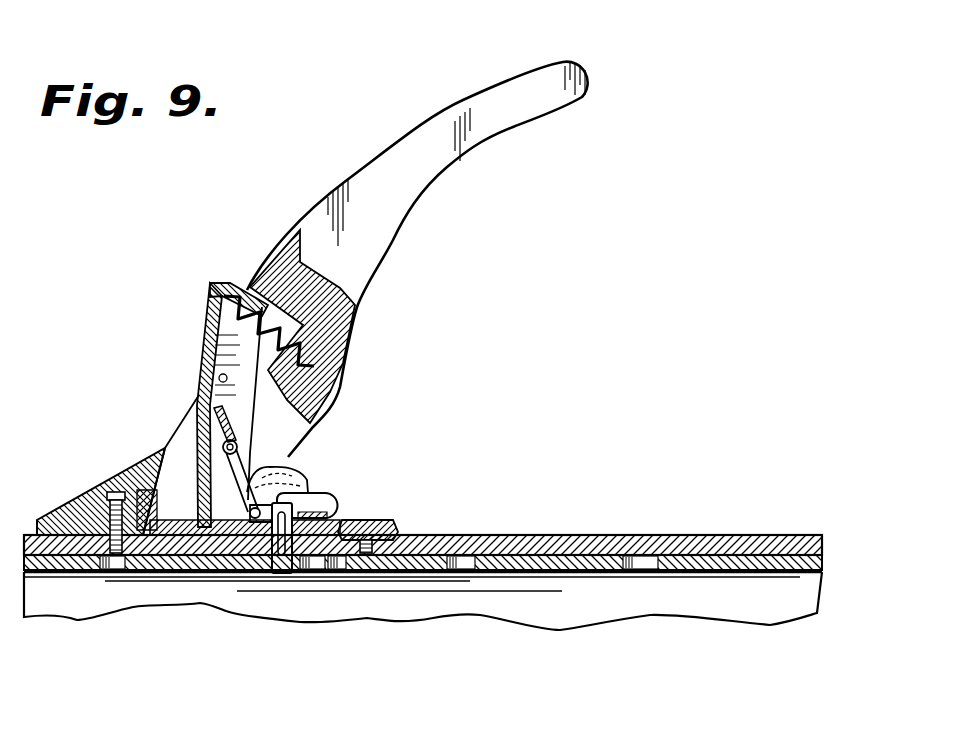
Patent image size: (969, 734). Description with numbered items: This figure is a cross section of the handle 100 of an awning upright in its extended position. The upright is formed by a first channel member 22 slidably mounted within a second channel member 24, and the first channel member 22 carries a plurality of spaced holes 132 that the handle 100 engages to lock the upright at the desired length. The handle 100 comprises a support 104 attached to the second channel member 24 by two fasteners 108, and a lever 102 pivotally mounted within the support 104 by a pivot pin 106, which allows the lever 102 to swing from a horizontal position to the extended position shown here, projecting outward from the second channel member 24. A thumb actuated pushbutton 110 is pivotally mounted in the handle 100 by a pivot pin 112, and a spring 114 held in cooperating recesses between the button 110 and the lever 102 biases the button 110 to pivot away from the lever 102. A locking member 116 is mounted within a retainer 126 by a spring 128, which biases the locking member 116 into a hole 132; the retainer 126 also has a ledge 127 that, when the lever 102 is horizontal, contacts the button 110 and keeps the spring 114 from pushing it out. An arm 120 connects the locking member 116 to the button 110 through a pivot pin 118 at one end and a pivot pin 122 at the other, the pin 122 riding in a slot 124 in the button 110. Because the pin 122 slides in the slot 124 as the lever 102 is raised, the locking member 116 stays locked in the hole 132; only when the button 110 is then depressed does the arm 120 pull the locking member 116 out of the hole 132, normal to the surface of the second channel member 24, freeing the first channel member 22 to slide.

The handle 100 is at (612, 263).
The lever 102 is at (537, 83).
The support 104 is at (100, 478).
The pivot pin 106 is at (218, 572).
The fastener 108 is at (100, 574).
The thumb actuated pushbutton 110 is at (210, 307).
The pivot pin 112 is at (198, 364).
The spring 114 is at (300, 314).
The locking member 116 is at (287, 574).
The pivot pin 118 is at (247, 572).
The arm 120 is at (290, 463).
The pivot pin 122 is at (238, 443).
The slot 124 is at (266, 403).
The retainer 126 is at (336, 572).
The ledge 127 is at (305, 474).
The spring 128 is at (338, 501).
The hole 132 is at (118, 572).
The first channel member 22 is at (741, 556).
The second channel member 24 is at (705, 533).